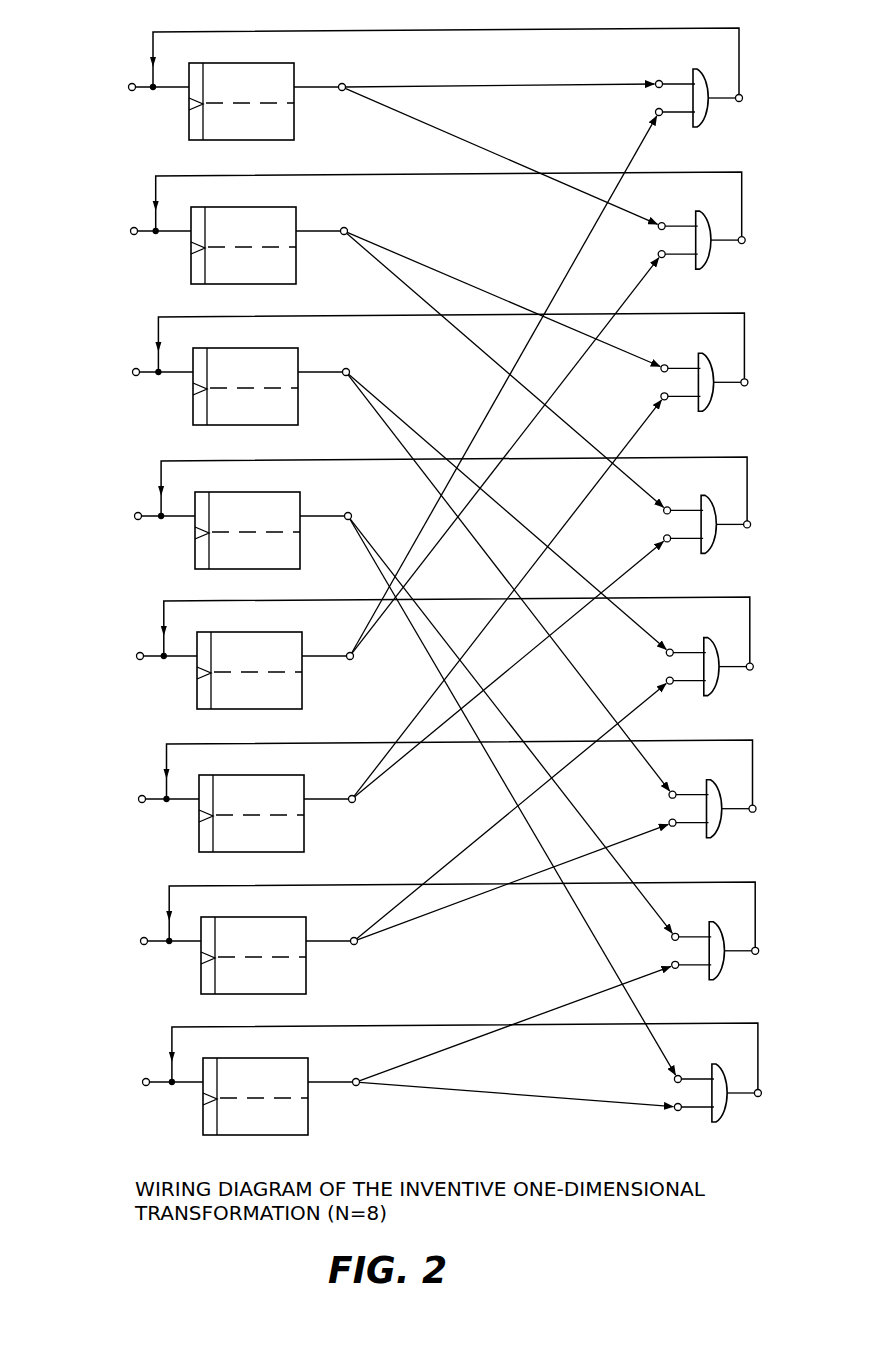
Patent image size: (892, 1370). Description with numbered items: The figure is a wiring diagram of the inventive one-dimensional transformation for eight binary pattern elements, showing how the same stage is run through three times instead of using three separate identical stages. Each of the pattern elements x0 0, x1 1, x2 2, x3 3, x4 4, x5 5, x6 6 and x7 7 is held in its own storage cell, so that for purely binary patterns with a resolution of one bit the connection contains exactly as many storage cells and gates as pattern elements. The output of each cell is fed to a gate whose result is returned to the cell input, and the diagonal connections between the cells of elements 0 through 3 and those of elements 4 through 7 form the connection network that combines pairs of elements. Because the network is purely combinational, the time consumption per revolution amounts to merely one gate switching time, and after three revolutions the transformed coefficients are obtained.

The pattern element x0 0 is at (412, 126).
The pattern element x1 1 is at (414, 340).
The pattern element x2 2 is at (417, 552).
The pattern element x3 3 is at (419, 766).
The pattern element x4 4 is at (421, 412).
The pattern element x5 5 is at (424, 626).
The pattern element x6 6 is at (426, 838).
The pattern element x7 7 is at (428, 1050).